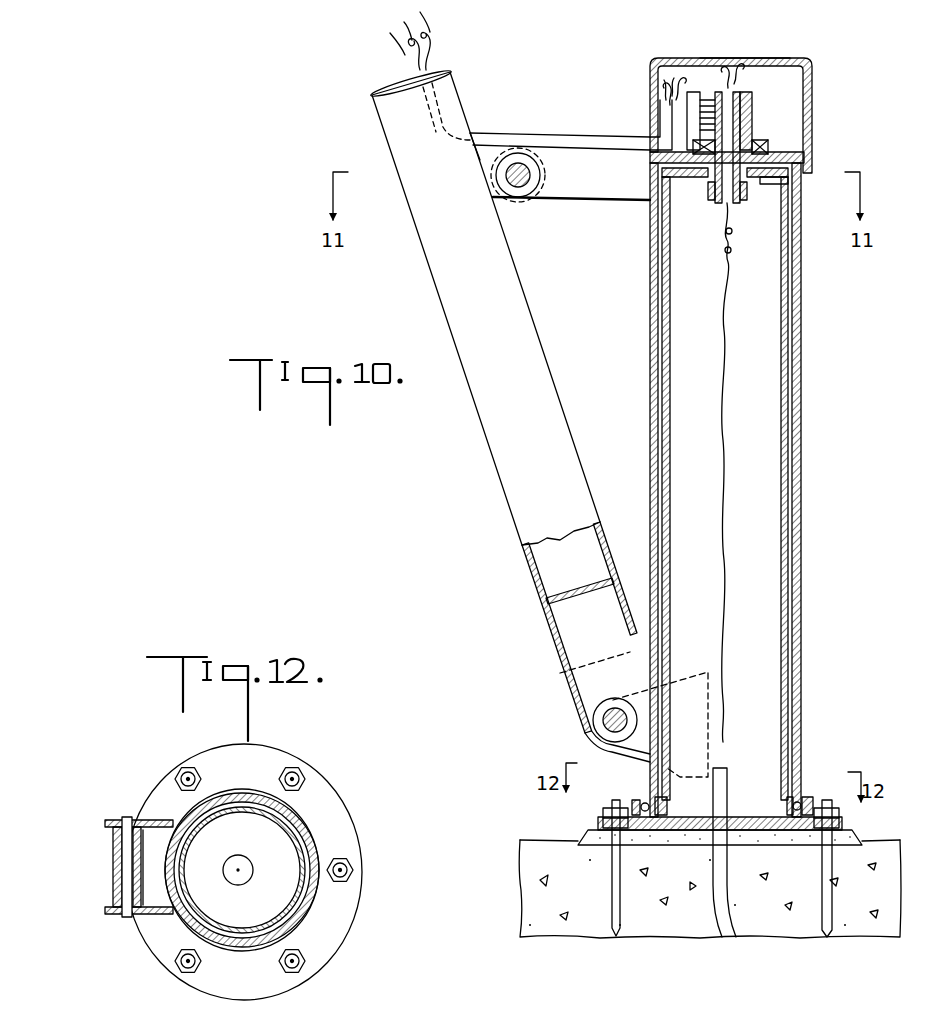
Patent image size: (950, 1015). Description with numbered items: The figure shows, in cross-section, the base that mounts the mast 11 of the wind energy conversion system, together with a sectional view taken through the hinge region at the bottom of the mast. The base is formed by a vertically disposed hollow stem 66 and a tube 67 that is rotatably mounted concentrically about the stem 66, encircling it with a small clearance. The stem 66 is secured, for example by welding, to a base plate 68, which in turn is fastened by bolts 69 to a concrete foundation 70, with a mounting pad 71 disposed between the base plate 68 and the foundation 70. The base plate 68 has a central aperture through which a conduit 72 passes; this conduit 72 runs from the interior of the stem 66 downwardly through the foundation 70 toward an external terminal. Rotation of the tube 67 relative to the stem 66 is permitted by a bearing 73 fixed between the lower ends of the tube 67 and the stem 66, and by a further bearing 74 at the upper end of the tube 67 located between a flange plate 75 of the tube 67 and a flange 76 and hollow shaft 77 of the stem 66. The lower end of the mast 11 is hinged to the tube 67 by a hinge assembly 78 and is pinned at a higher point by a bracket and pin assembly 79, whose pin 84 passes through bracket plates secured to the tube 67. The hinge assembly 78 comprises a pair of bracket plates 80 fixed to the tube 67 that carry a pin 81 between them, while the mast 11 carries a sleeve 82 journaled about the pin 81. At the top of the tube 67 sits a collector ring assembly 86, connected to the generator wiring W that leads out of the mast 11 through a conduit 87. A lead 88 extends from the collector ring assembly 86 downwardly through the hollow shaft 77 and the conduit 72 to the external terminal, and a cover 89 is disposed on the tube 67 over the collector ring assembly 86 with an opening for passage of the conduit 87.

In FIG. 10, the wiring W is at (432, 38).
In FIG. 10, the mast 11 is at (476, 436).
In FIG. 10, the hollow stem 66 is at (782, 406).
In FIG. 12, the hollow stem 66 is at (292, 900).
In FIG. 10, the tube 67 is at (802, 455).
In FIG. 12, the tube 67 is at (305, 904).
In FIG. 10, the base plate 68 is at (755, 816).
In FIG. 12, the base plate 68 is at (343, 823).
In FIG. 10, the bolts 69 is at (614, 925).
In FIG. 12, the bolts 69 is at (302, 779).
In FIG. 10, the concrete foundation 70 is at (530, 840).
In FIG. 10, the mounting pad 71 is at (598, 838).
In FIG. 10, the conduit 72 is at (719, 918).
In FIG. 12, the conduit 72 is at (240, 858).
In FIG. 10, the bearing 73 is at (810, 792).
In FIG. 10, the bearing 74 is at (754, 140).
In FIG. 10, the flange plate 75 is at (770, 150).
In FIG. 10, the flange 76 is at (768, 182).
In FIG. 10, the hollow shaft 77 is at (741, 206).
In FIG. 10, the hinge assembly 78 is at (590, 739).
In FIG. 12, the hinge assembly 78 is at (113, 858).
In FIG. 10, the bracket and pin assembly 79 is at (518, 211).
In FIG. 12, the bracket plates 80 is at (158, 820).
In FIG. 12, the pin 81 is at (122, 917).
In FIG. 12, the sleeve 82 is at (112, 853).
In FIG. 10, the pin 84 is at (523, 163).
In FIG. 10, the collector ring assembly 86 is at (772, 88).
In FIG. 10, the conduit 87 is at (594, 138).
In FIG. 10, the lead 88 is at (726, 283).
In FIG. 10, the cover 89 is at (772, 58).